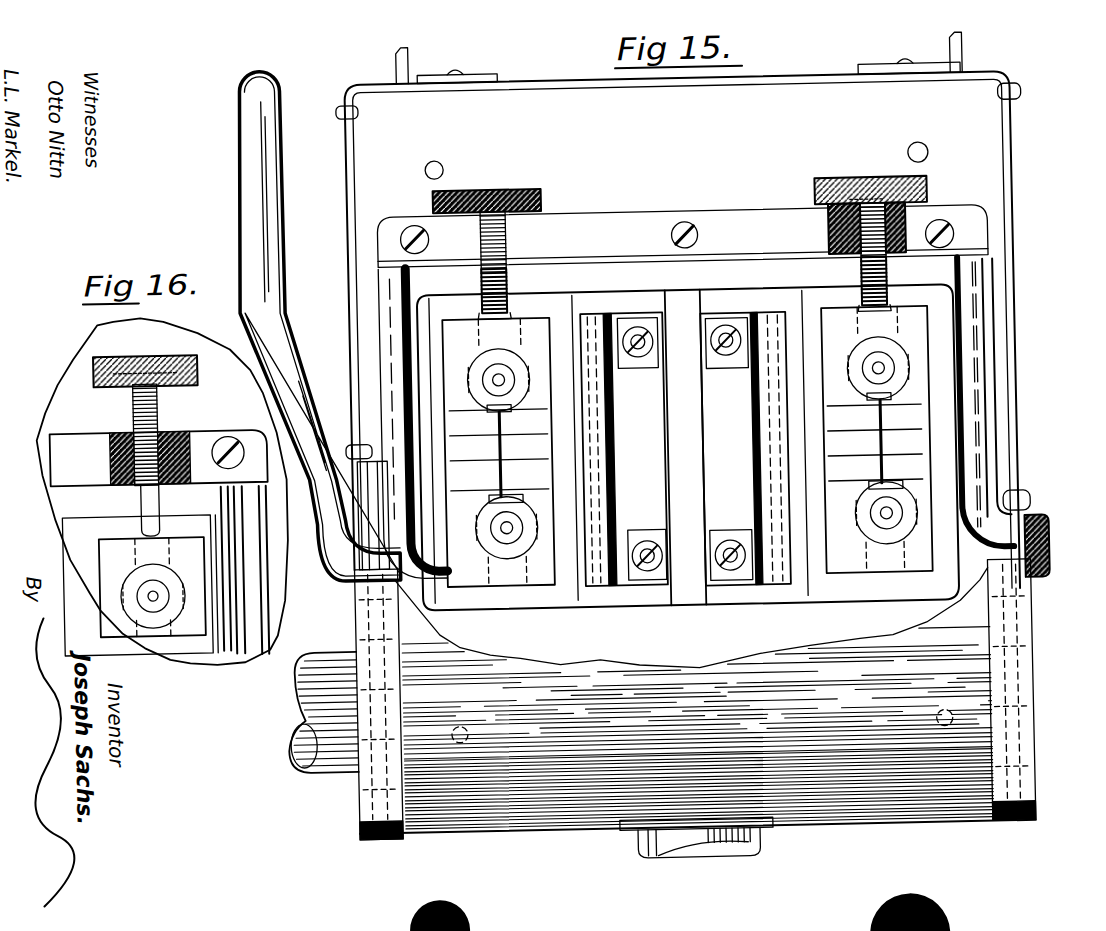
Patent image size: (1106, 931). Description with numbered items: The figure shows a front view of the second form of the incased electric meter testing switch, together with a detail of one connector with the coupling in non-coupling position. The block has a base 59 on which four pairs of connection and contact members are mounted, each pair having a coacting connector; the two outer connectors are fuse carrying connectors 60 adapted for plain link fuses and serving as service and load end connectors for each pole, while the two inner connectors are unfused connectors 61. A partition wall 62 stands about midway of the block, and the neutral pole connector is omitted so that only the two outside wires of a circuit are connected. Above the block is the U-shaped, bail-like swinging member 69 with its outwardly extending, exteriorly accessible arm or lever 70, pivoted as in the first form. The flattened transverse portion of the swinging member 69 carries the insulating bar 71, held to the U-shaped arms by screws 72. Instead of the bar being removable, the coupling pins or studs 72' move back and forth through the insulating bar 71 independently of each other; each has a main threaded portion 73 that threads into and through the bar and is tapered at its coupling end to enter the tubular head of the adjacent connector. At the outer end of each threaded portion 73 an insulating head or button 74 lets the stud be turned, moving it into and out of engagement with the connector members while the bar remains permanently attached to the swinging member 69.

In FIG. 15, the base 59 is at (552, 604).
In FIG. 16, the base 59 is at (91, 521).
In FIG. 15, the fuse carrying connector 60 is at (543, 377).
In FIG. 15, the unfused connector 61 is at (612, 452).
In FIG. 15, the partition wall 62 is at (693, 607).
In FIG. 15, the U-shaped swinging member 69 is at (405, 434).
In FIG. 15, the arm or lever 70 is at (287, 224).
In FIG. 15, the insulating bar 71 is at (780, 226).
In FIG. 15, the screw 72 is at (695, 215).
In FIG. 15, the coupling stud 72' is at (693, 201).
In FIG. 15, the main threaded portion 73 is at (516, 291).
In FIG. 15, the insulating head or button 74 is at (553, 204).